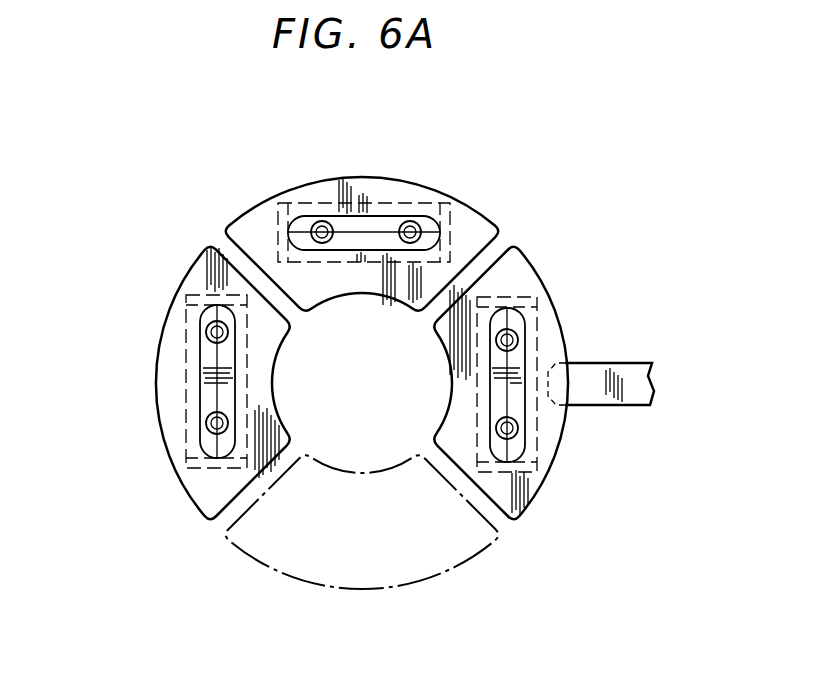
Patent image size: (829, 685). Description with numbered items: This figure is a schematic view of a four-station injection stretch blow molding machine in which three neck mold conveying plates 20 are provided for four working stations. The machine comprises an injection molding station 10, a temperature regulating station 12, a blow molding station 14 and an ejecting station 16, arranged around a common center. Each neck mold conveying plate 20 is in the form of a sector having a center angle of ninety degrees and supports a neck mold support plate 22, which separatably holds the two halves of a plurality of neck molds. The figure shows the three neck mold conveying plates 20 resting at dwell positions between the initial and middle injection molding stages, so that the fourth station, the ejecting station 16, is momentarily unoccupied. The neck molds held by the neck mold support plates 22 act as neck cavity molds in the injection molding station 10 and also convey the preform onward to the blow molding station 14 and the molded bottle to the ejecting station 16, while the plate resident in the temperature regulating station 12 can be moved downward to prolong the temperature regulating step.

The injection molding station 10 is at (365, 389).
The temperature regulating station 12 is at (472, 207).
The blow molding station 14 is at (158, 362).
The ejecting station 16 is at (368, 590).
The neck mold conveying plate 20 is at (530, 408).
The neck mold support plate 22 is at (538, 442).